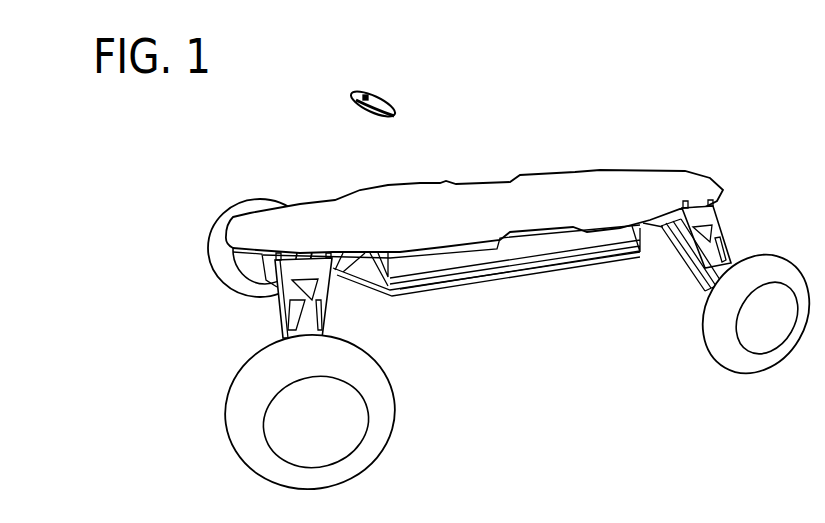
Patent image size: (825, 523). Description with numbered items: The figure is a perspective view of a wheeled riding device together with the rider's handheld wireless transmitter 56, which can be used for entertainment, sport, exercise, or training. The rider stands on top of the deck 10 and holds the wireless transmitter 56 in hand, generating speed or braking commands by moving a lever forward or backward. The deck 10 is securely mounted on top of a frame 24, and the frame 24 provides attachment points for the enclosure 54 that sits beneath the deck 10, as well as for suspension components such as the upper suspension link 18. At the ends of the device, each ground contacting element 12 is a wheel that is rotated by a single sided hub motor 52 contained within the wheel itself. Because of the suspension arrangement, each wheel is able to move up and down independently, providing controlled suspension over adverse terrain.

The deck 10 is at (643, 193).
The ground contacting element 12 is at (770, 268).
The upper suspension link 18 is at (717, 217).
The frame 24 is at (398, 287).
The single sided hub motor 52 is at (356, 407).
The enclosure 54 is at (510, 255).
The wireless transmitter 56 is at (376, 101).